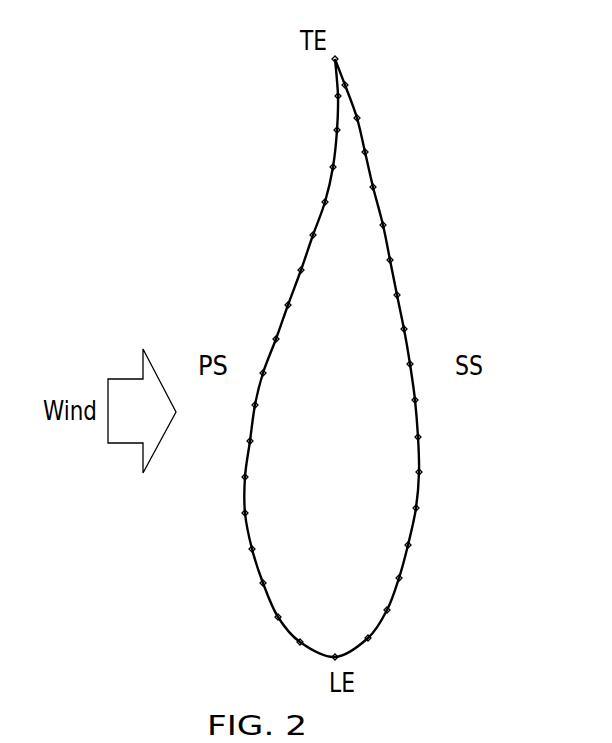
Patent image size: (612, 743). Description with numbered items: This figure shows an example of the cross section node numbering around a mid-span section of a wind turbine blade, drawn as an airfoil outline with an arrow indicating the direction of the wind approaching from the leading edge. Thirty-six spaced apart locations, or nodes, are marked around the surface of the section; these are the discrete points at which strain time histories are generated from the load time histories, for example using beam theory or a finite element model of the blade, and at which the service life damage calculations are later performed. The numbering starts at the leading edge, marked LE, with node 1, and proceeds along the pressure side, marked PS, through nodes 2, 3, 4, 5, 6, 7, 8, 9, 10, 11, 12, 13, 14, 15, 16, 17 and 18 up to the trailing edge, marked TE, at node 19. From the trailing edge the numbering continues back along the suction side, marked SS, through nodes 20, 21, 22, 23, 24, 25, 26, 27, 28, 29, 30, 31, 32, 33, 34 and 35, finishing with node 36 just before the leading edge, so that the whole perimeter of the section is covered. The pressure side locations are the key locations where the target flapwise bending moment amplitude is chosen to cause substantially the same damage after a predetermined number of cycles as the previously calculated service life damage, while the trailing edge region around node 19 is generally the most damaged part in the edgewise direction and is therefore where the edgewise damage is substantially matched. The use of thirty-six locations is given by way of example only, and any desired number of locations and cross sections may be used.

The cross section node 1 is at (325, 676).
The cross section node 2 is at (295, 655).
The cross section node 3 is at (271, 628).
The cross section node 4 is at (255, 591).
The cross section node 5 is at (244, 554).
The cross section node 6 is at (237, 514).
The cross section node 7 is at (236, 478).
The cross section node 8 is at (240, 438).
The cross section node 9 is at (247, 401).
The cross section node 10 is at (250, 366).
The cross section node 11 is at (263, 337).
The cross section node 12 is at (274, 303).
The cross section node 13 is at (286, 266).
The cross section node 14 is at (299, 236).
The cross section node 15 is at (311, 199).
The cross section node 16 is at (318, 164).
The cross section node 17 is at (323, 129).
The cross section node 18 is at (325, 93).
The cross section node 19 is at (346, 44).
The cross section node 20 is at (358, 84).
The cross section node 21 is at (370, 119).
The cross section node 22 is at (378, 154).
The cross section node 23 is at (387, 191).
The cross section node 24 is at (397, 225).
The cross section node 25 is at (404, 261).
The cross section node 26 is at (411, 296).
The cross section node 27 is at (419, 330).
The cross section node 28 is at (426, 366).
The cross section node 29 is at (429, 401).
The cross section node 30 is at (431, 438).
The cross section node 31 is at (432, 473).
The cross section node 32 is at (429, 509).
The cross section node 33 is at (422, 546).
The cross section node 34 is at (411, 583).
The cross section node 35 is at (399, 616).
The cross section node 36 is at (379, 649).